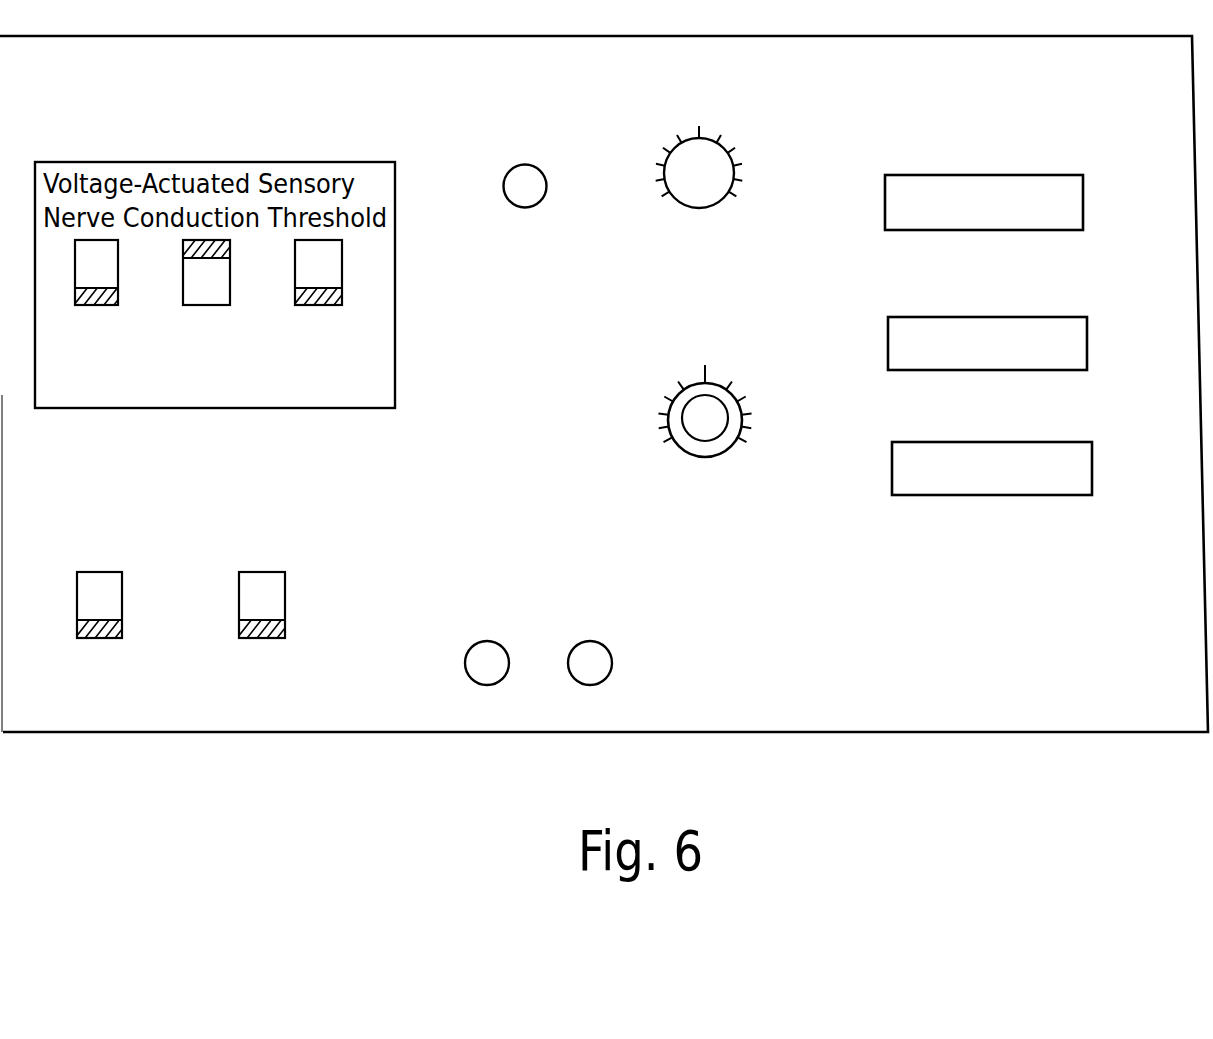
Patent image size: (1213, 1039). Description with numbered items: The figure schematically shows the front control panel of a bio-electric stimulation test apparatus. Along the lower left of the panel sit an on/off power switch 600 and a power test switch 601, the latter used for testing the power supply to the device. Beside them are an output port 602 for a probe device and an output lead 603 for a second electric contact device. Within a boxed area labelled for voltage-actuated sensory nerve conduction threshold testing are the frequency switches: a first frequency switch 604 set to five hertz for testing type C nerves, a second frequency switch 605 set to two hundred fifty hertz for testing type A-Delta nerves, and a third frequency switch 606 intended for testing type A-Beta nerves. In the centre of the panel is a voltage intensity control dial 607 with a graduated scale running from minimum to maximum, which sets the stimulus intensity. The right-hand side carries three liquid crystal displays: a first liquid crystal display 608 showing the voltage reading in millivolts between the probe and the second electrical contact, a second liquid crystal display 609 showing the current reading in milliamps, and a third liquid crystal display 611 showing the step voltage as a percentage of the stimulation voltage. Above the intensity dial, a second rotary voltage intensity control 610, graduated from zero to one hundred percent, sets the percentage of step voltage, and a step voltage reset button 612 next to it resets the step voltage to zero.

The on/off power switch 600 is at (123, 622).
The power test switch 601 is at (285, 625).
The output port 602 is at (485, 614).
The output lead 603 is at (581, 614).
The first frequency switch 604 is at (342, 295).
The second frequency switch 605 is at (230, 250).
The 200 Hz A-Beta nerves indicator 606 is at (119, 292).
The voltage intensity control dial 607 is at (723, 429).
The first liquid crystal display 608 is at (1090, 472).
The second liquid crystal display 609 is at (1083, 353).
The second rotary voltage intensity control 610 is at (708, 136).
The third liquid crystal display 611 is at (1025, 175).
The step voltage reset button 612 is at (527, 166).